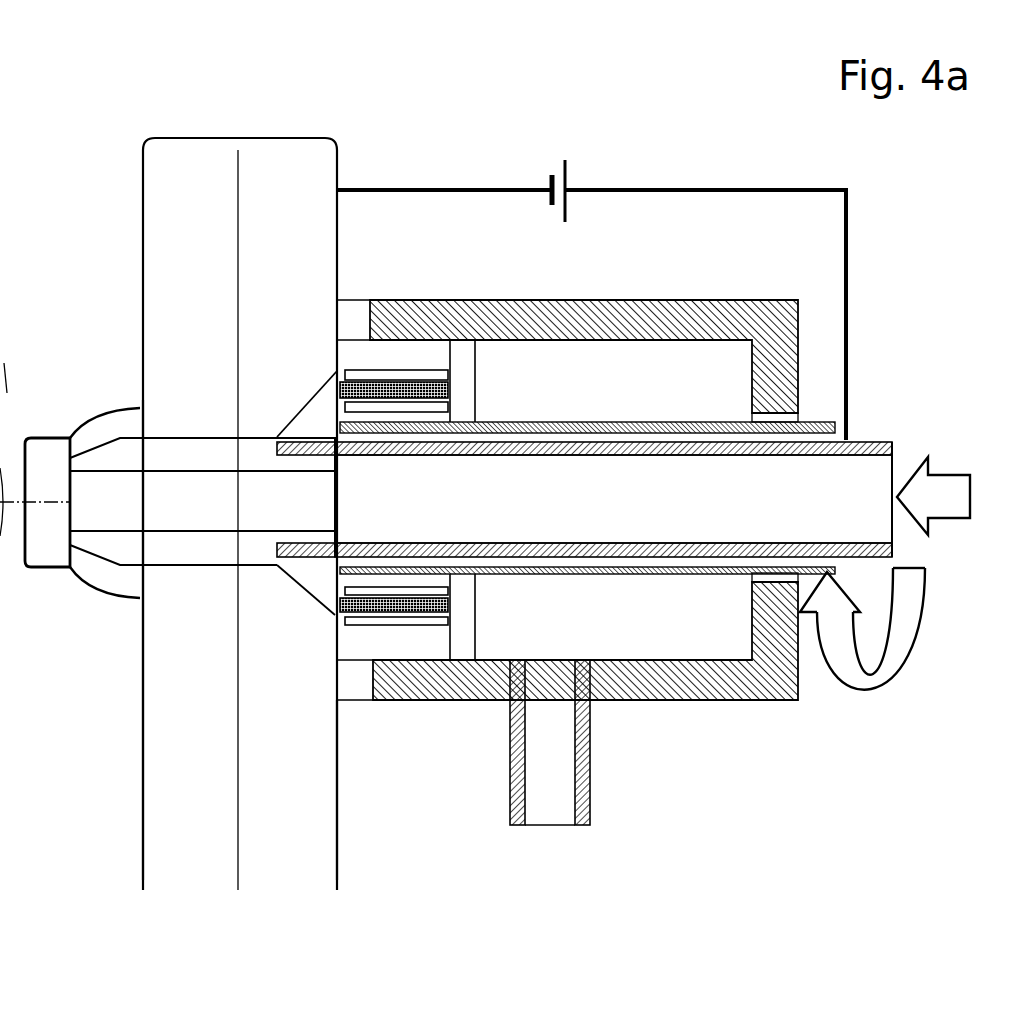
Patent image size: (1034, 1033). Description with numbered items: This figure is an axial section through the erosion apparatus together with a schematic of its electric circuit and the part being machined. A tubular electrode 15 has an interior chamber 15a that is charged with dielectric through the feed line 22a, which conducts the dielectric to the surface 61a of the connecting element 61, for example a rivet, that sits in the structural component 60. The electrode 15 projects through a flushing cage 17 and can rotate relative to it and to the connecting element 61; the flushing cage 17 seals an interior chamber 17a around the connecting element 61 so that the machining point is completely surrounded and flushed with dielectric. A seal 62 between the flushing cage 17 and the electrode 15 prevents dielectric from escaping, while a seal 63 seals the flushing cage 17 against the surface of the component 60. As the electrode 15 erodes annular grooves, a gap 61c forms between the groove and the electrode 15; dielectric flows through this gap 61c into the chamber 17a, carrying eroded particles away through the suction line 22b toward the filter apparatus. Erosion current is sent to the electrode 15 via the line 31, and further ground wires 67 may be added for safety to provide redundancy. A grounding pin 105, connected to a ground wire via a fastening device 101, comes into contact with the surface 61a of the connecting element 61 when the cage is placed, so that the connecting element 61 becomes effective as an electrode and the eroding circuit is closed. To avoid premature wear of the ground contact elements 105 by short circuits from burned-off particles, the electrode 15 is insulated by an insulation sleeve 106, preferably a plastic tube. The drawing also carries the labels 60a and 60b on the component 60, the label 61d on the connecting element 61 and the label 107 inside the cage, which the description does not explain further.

The tubular electrode 15 is at (875, 440).
The interior chamber of the tubular electrode 15a is at (613, 499).
The flushing cage 17 is at (768, 685).
The interior chamber 17a is at (587, 473).
The feed line 22a is at (950, 522).
The suction line 22b is at (557, 767).
The line 31 is at (768, 188).
The structural component 60 is at (248, 138).
The inner side of wall 60a is at (303, 708).
The outer side of wall 60b is at (188, 812).
The connecting element 61 is at (190, 458).
The surface of the connecting element 61a is at (330, 413).
The gap 61c is at (310, 440).
The tube channel 61d is at (315, 502).
The seal 62 is at (770, 413).
The seal 63 is at (350, 328).
The ground wires 67 is at (408, 188).
The fastening device 101 is at (437, 637).
The ground contact element 105 is at (333, 613).
The insulation sleeve 106 is at (663, 574).
The upper coil / winding 107 is at (410, 370).